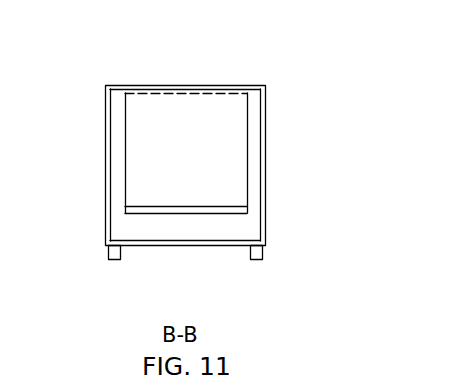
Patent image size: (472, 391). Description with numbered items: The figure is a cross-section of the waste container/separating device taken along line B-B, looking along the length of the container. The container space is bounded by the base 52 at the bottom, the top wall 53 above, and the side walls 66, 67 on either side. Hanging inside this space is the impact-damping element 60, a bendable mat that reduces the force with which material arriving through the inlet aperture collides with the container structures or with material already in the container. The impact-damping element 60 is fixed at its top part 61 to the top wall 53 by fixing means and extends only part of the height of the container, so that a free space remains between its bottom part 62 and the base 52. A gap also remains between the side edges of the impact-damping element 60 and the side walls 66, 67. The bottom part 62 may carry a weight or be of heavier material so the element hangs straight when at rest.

The base 52 is at (220, 249).
The top wall 53 is at (218, 86).
The impact-damping element 60 is at (165, 145).
The top part of the impact-damping element 61 is at (134, 92).
The bottom part of the impact-damping element 62 is at (195, 207).
The side wall 66 is at (263, 142).
The side wall 67 is at (110, 165).